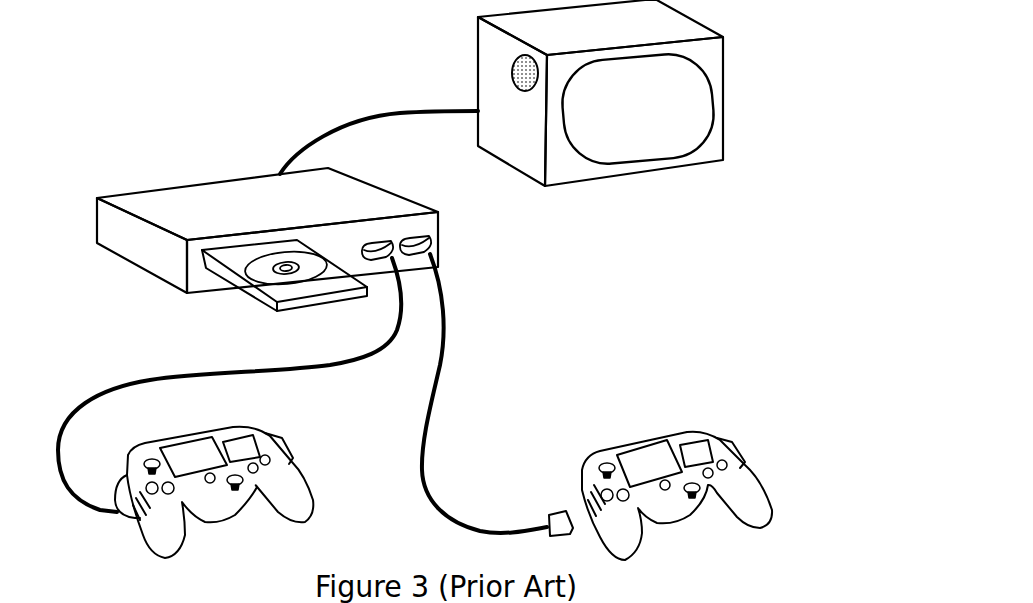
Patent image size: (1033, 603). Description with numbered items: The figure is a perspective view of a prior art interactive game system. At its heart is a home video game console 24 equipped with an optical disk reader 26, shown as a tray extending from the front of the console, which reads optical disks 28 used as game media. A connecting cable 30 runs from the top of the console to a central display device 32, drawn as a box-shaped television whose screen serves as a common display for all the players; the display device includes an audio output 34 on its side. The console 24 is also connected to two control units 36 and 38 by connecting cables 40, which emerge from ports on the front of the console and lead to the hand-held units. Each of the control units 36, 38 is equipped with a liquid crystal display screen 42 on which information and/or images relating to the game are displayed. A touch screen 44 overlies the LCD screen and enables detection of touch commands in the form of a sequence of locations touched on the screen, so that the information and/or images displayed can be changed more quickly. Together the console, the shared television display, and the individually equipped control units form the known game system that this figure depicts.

The home video game console 24 is at (265, 212).
The optical disk reader 26 is at (223, 255).
The optical disk 28 is at (262, 270).
The connecting cable 30 is at (365, 113).
The central display device 32 is at (668, 103).
The audio output 34 is at (512, 72).
The control unit 36 is at (282, 478).
The control unit 38 is at (752, 492).
The connecting cables 40 is at (393, 338).
The liquid crystal display screen 42 is at (663, 432).
The touch screen 44 is at (642, 458).